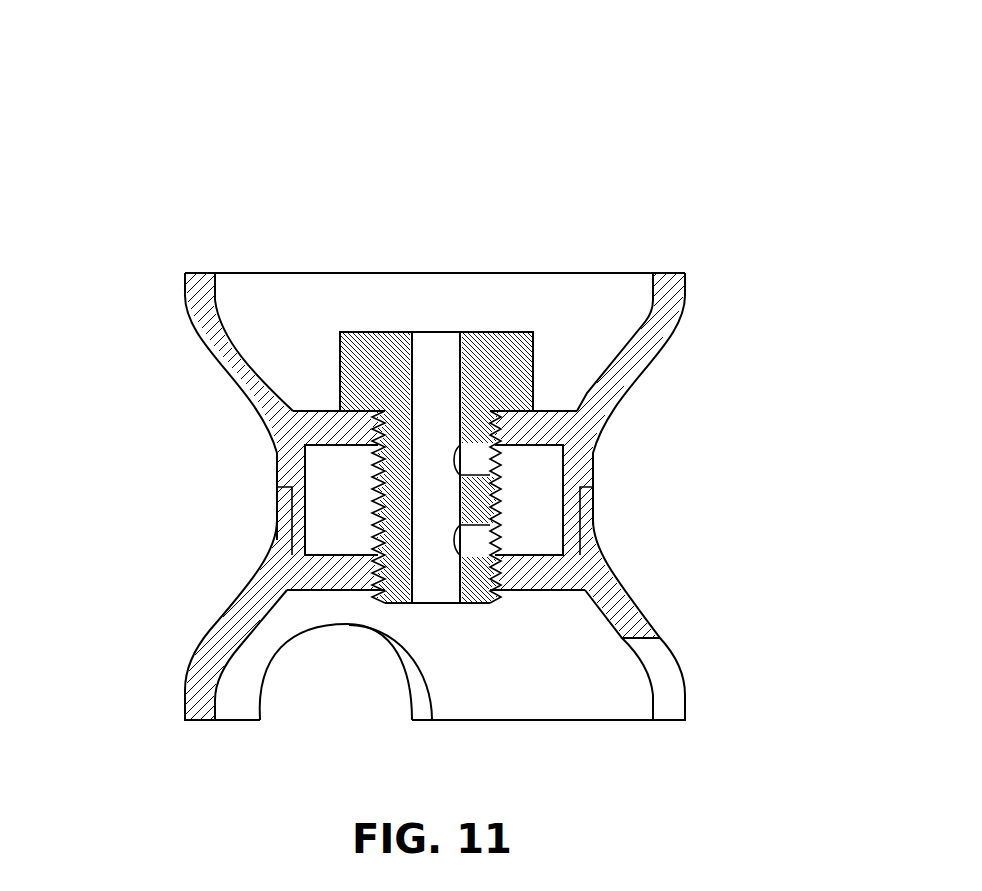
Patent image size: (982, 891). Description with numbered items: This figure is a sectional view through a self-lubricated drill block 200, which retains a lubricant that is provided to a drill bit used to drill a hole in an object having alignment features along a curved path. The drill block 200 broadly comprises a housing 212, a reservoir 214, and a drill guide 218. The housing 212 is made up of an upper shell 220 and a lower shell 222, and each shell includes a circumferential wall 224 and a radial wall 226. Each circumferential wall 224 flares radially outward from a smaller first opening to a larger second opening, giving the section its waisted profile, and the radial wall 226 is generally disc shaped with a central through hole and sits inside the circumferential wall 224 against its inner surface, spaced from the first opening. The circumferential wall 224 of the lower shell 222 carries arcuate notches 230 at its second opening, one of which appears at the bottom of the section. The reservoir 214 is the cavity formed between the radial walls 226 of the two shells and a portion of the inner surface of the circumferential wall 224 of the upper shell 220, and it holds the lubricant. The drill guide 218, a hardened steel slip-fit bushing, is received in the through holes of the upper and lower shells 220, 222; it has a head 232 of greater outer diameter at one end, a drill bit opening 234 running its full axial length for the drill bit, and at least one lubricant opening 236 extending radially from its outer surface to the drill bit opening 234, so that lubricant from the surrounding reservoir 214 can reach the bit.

The self-lubricated drill block 200 is at (449, 78).
The housing 212 is at (690, 491).
The reservoir 214 is at (328, 472).
The drill guide 218 is at (548, 336).
The upper shell 220 is at (183, 355).
The lower shell 222 is at (205, 604).
The circumferential wall 224 is at (627, 377).
The radial wall 226 is at (552, 427).
The notch 230 is at (334, 692).
The head 232 is at (363, 342).
The drill bit opening 234 is at (433, 338).
The lubricant opening 236 is at (492, 455).